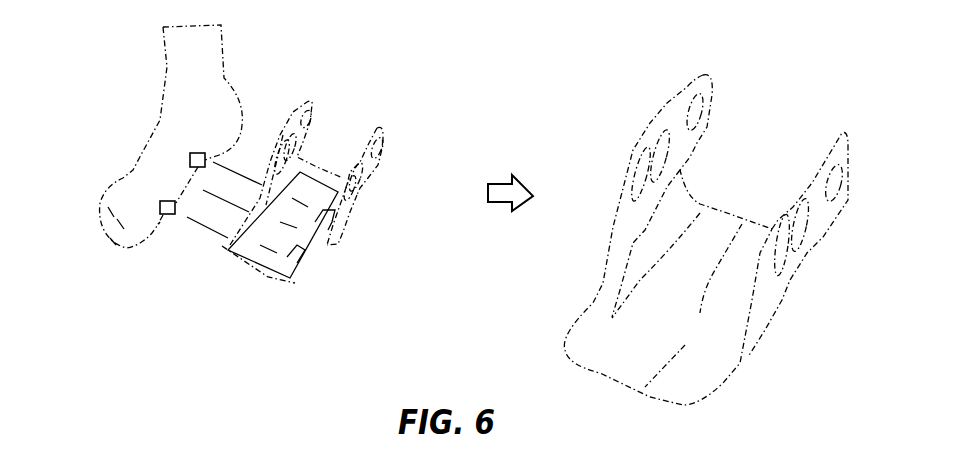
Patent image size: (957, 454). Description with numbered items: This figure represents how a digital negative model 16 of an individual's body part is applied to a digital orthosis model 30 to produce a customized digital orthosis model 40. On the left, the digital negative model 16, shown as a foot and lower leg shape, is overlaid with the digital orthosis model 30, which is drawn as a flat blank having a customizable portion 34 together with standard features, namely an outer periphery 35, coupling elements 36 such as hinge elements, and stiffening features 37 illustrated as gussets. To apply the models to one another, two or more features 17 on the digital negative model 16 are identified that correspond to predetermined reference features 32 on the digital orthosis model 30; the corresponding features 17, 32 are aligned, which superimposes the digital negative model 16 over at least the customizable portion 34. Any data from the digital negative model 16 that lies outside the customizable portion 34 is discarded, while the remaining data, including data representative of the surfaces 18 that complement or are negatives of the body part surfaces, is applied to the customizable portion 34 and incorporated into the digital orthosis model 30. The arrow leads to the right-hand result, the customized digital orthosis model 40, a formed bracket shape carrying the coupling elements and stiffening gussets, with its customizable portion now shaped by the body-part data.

The digital negative model 16 is at (183, 65).
The features 17 is at (190, 156).
The surfaces 18 is at (192, 188).
The digital orthosis model 30 is at (347, 104).
The predetermined reference features 32 is at (320, 226).
The customizable portion 34 is at (292, 271).
The outer periphery 35 is at (350, 212).
The coupling elements 36 is at (377, 150).
The stiffening features 37 is at (359, 175).
The customized digital orthosis model 40 is at (787, 92).